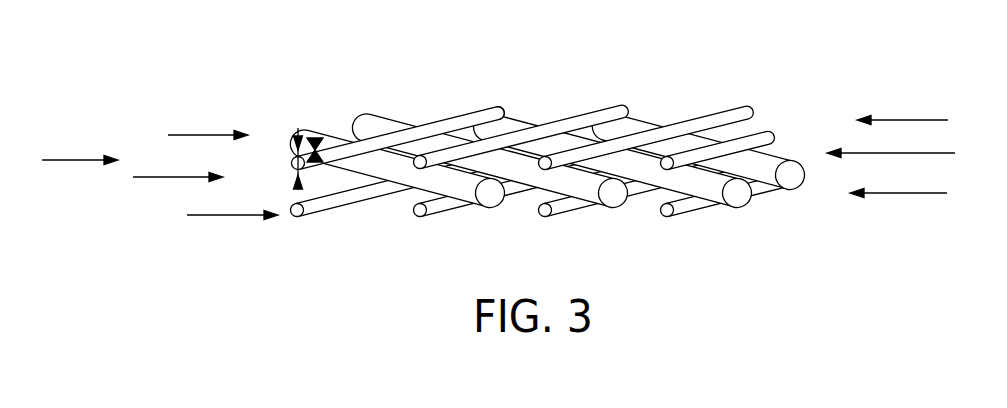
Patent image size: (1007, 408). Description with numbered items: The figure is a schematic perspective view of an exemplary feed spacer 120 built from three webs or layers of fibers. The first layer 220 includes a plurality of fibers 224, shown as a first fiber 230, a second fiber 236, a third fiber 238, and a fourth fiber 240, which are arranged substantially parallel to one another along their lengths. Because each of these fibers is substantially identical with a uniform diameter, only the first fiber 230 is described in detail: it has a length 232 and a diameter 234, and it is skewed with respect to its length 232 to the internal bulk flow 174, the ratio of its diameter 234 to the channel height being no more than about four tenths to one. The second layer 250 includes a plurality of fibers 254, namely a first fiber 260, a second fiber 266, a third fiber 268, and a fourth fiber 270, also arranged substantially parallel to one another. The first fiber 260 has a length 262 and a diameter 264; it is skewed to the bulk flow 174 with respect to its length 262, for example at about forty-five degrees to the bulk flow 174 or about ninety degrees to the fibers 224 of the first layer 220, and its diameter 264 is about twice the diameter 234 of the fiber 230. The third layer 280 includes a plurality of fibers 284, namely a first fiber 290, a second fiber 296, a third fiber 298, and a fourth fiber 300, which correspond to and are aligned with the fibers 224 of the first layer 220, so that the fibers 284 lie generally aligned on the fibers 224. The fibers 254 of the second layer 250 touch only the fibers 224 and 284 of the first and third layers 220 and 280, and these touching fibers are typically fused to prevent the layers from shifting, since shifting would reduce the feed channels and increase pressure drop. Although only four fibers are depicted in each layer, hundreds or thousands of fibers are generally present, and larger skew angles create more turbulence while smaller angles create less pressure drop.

The feed spacer 120 is at (697, 97).
The bulk flow 174 is at (67, 160).
The first layer 220 is at (937, 120).
The plurality of fibers 224 is at (197, 135).
The first fiber 230 is at (494, 107).
The length 232 is at (432, 123).
The diameter 234 is at (291, 162).
The second fiber 236 is at (622, 111).
The third fiber 238 is at (745, 110).
The fourth fiber 240 is at (768, 136).
The second layer 250 is at (153, 178).
The plurality of fibers 254 is at (942, 153).
The first fiber 260 is at (329, 133).
The length 262 is at (371, 150).
The diameter 264 is at (490, 152).
The second fiber 266 is at (613, 200).
The third fiber 268 is at (735, 200).
The fourth fiber 270 is at (797, 190).
The third layer 280 is at (935, 193).
The plurality of fibers 284 is at (220, 217).
The first fiber 290 is at (332, 203).
The second fiber 296 is at (441, 208).
The third fiber 298 is at (563, 203).
The fourth fiber 300 is at (677, 212).